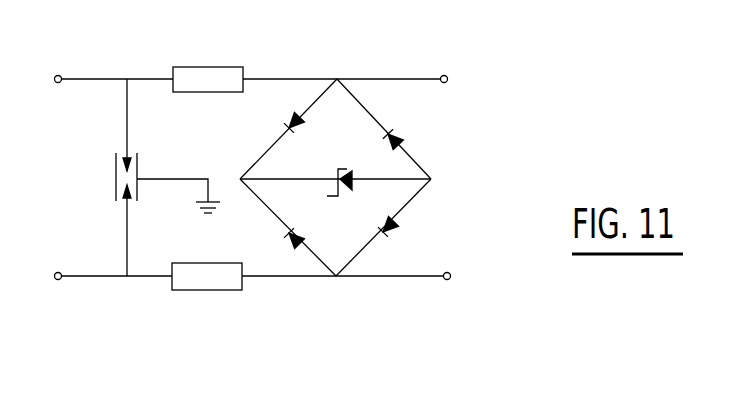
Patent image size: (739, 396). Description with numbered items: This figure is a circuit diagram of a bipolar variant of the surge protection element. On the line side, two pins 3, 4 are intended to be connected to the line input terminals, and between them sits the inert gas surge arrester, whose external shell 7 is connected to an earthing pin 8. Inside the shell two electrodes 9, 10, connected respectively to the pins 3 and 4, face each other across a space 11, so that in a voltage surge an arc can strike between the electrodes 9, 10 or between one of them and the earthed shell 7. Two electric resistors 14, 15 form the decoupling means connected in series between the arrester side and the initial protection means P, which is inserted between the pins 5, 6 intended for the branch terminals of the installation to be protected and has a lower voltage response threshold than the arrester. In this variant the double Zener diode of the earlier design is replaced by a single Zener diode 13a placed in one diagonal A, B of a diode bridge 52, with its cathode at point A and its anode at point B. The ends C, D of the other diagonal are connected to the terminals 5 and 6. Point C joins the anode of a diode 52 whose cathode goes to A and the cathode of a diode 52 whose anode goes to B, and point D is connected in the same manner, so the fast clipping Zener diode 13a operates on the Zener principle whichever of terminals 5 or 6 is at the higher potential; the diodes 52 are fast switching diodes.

The pin 3 is at (58, 73).
The pin 4 is at (58, 282).
The pin 5 is at (445, 73).
The pin 6 is at (450, 280).
The external shell 7 is at (116, 188).
The earthing pin 8 is at (175, 181).
The electrode 9 is at (127, 115).
The electrode 10 is at (127, 238).
The space 11 is at (122, 176).
The electric resistor 14 is at (202, 74).
The electric resistor 15 is at (213, 278).
The diode bridge 52 is at (290, 119).
The single Zener diode 13a is at (348, 166).
The point A is at (239, 176).
The point B is at (433, 177).
The point C is at (336, 78).
The point D is at (337, 277).
The initial protection means P is at (345, 200).